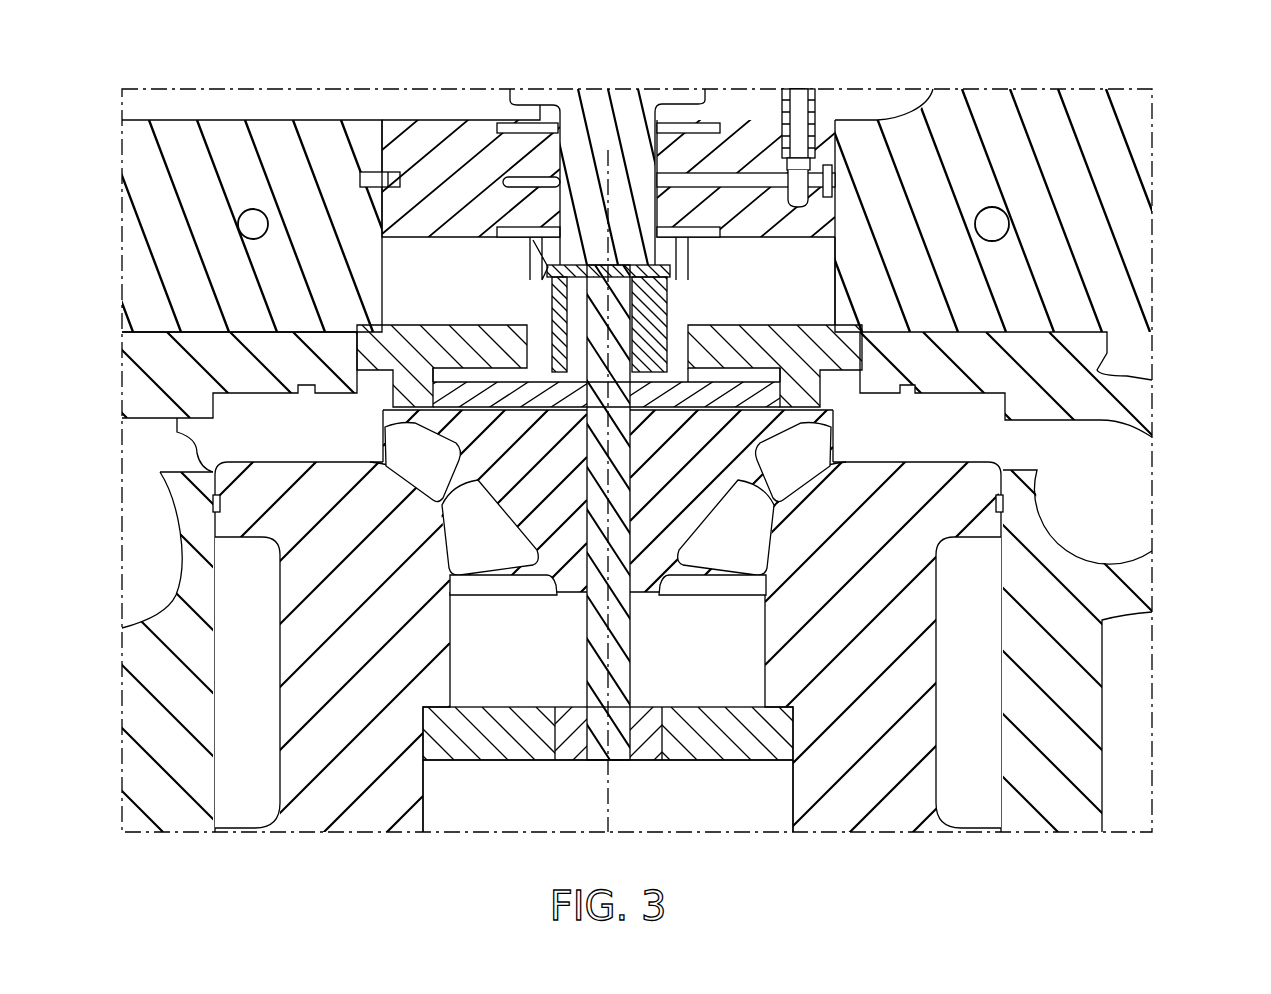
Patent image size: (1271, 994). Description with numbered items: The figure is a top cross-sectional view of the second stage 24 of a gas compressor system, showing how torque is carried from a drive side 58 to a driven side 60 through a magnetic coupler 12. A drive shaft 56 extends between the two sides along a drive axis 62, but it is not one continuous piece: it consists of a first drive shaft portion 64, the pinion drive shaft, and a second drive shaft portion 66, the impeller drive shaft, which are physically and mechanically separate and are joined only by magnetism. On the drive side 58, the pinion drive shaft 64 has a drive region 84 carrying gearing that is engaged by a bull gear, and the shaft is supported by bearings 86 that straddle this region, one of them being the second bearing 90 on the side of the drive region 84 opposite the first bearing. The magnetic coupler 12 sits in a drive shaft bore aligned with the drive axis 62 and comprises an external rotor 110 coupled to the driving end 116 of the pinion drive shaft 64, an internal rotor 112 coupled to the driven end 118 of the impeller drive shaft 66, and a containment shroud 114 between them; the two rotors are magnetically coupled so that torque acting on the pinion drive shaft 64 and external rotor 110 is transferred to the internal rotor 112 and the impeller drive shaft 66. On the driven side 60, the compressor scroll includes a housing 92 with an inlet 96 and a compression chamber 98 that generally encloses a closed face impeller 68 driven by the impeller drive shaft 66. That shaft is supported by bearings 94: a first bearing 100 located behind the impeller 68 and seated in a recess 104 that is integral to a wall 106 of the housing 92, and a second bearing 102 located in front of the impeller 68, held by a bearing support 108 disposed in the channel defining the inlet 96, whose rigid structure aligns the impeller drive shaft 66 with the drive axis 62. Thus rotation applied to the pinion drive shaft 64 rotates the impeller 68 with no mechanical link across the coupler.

The magnetic coupler 12 is at (524, 262).
The second stage 24 is at (395, 105).
The drive shaft 56 is at (622, 107).
The drive side 58 is at (893, 183).
The driven side 60 is at (900, 626).
The drive axis 62 is at (612, 166).
The first drive shaft portion 64 is at (596, 145).
The second drive shaft portion 66 is at (615, 466).
The impeller 68 is at (758, 498).
The drive region 84 is at (682, 92).
The bearings 86 is at (804, 202).
The second bearing 90 is at (812, 212).
The housing 92 is at (852, 789).
The bearings 94 is at (606, 576).
The inlet 96 is at (687, 783).
The compression chamber 98 is at (1114, 466).
The first bearing 100 is at (606, 350).
The second bearing 102 is at (575, 750).
The recess 104 is at (487, 362).
The wall 106 is at (792, 345).
The bearing support 108 is at (473, 748).
The external rotor 110 is at (673, 268).
The internal rotor 112 is at (655, 344).
The containment shroud 114 is at (655, 330).
The driving end 116 is at (585, 231).
The driven end 118 is at (591, 299).